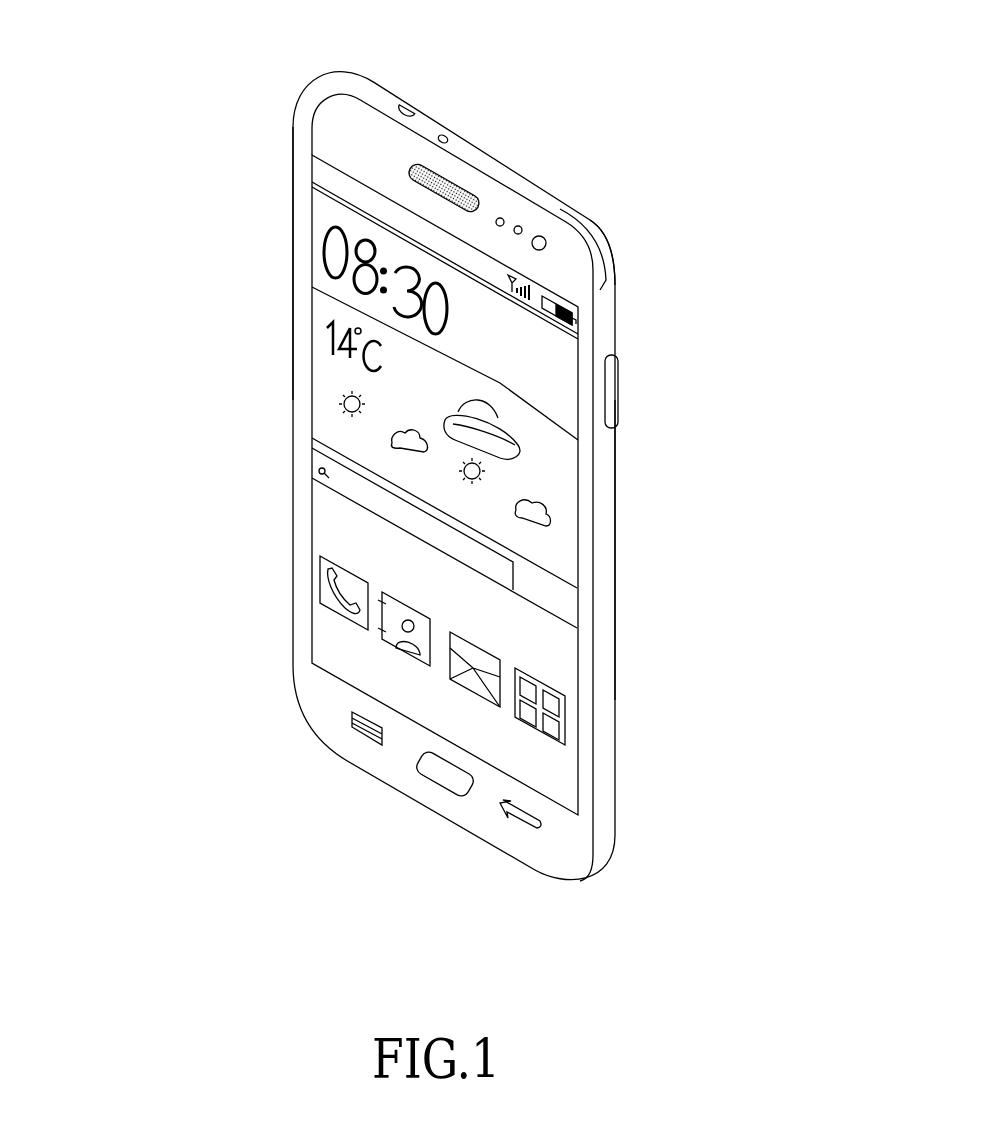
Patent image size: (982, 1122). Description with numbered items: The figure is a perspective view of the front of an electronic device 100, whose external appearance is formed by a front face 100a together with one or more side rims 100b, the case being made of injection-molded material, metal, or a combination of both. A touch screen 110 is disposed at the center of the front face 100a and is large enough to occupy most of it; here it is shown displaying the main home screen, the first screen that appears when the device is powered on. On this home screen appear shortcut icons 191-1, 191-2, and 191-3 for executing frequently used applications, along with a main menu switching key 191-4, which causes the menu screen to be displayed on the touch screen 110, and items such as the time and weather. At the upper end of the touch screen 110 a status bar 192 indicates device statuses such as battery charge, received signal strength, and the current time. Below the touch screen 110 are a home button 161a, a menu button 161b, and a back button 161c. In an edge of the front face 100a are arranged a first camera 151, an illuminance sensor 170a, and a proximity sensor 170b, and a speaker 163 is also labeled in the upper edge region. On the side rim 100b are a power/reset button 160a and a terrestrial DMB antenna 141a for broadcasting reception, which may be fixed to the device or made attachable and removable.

The electronic device 100 is at (258, 73).
The front face 100a is at (312, 128).
The side rim 100b is at (612, 548).
The terrestrial DMB antenna 141a is at (598, 245).
The status bar 192 is at (323, 175).
The touch screen 110 is at (325, 417).
The speaker 163 is at (413, 170).
The illuminance sensor 170a is at (500, 218).
The proximity sensor 170b is at (519, 226).
The first camera 151 is at (540, 236).
The power/reset button 160a is at (620, 392).
The home button 161a is at (447, 773).
The menu button 161b is at (350, 714).
The back button 161c is at (523, 827).
The shortcut icon 191-1 is at (320, 572).
The shortcut icon 191-2 is at (407, 603).
The shortcut icon 191-3 is at (487, 650).
The main menu switching key 191-4 is at (542, 680).